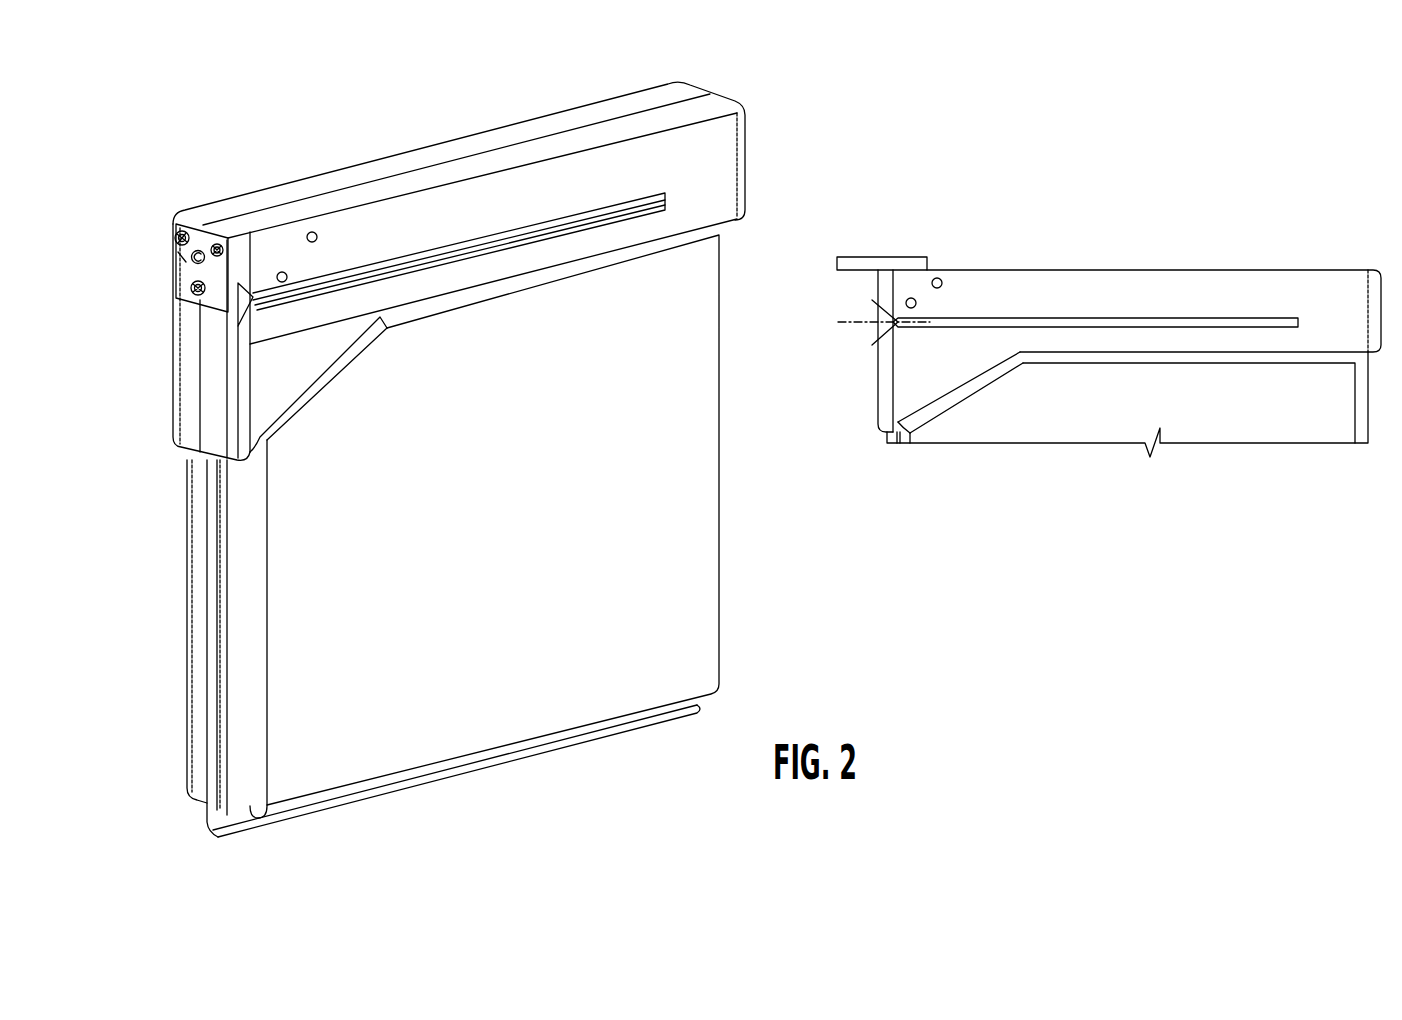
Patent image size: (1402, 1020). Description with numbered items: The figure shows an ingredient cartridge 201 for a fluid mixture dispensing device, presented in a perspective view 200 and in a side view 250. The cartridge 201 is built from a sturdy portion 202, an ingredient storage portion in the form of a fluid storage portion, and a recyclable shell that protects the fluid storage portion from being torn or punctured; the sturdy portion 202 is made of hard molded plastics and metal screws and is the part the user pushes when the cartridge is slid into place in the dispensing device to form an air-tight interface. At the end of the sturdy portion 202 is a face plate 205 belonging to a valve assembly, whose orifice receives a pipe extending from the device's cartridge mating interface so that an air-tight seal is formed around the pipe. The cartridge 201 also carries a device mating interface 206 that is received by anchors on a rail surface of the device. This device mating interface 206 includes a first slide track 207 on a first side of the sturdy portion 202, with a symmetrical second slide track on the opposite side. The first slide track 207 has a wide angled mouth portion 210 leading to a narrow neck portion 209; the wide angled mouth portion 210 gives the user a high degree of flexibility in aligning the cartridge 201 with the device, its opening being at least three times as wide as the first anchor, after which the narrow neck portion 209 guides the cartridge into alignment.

The perspective view 200 is at (405, 82).
The ingredient cartridge 201 is at (946, 540).
The sturdy portion 202 is at (735, 165).
The face plate 205 is at (175, 232).
The device mating interface 206 is at (871, 237).
The first slide track 207 is at (1156, 318).
The narrow neck portion 209 is at (475, 250).
The wide angled mouth portion 210 is at (250, 292).
The side view 250 is at (1062, 146).